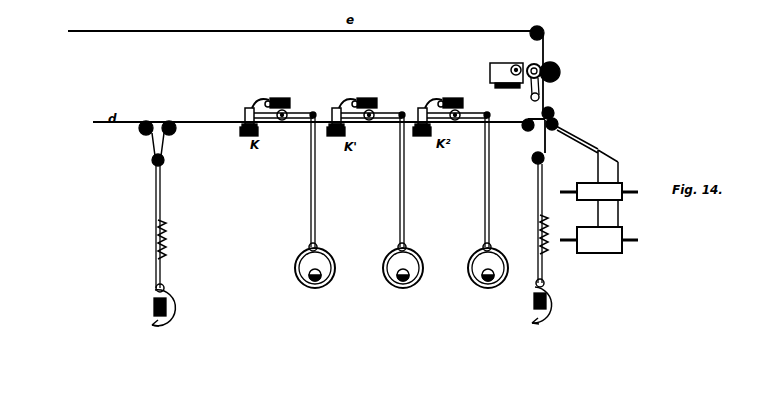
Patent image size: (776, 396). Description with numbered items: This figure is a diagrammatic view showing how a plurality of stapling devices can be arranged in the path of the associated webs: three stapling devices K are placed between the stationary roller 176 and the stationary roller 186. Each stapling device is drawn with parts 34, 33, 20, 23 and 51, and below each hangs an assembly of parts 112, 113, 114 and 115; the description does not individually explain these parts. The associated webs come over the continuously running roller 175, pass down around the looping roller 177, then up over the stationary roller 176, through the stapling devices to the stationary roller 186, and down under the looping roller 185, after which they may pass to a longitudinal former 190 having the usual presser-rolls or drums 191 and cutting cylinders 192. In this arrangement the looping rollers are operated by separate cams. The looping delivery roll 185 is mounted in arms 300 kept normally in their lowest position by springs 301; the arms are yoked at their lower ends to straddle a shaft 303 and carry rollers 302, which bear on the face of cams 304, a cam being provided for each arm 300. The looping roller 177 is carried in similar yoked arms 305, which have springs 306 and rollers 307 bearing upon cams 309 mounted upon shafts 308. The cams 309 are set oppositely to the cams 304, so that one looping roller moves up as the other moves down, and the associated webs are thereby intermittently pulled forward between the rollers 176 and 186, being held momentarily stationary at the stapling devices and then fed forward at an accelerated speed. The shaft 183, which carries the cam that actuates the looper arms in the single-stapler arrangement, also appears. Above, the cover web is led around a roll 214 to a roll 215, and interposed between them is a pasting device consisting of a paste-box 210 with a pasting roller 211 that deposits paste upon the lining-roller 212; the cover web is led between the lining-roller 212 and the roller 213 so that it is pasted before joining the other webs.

The weight block 20 is at (373, 96).
The pulley rod 23 is at (293, 112).
The lever arm 33 is at (258, 103).
The bracket 34 is at (241, 115).
The contact block 51 is at (259, 131).
The suspension rod 112 is at (316, 175).
The float ball 113 is at (307, 266).
The weight 114 is at (326, 281).
The collar 115 is at (318, 250).
The continuously running roller 175 is at (152, 112).
The stationary roller 176 is at (172, 121).
The looping roller 177 is at (165, 160).
The shaft 183 is at (533, 159).
The looping roller 185 is at (559, 124).
The stationary roller 186 is at (520, 131).
The longitudinal former 190 is at (592, 142).
The presser-rolls or drums 191 is at (599, 191).
The cutting cylinders 192 is at (599, 240).
The paste-box 210 is at (492, 70).
The pasting roller 211 is at (516, 65).
The lining-roller 212 is at (540, 67).
The roller 213 is at (561, 72).
The roll 214 is at (545, 32).
The roll 215 is at (555, 112).
The arms 300 is at (538, 213).
The springs 301 is at (549, 255).
The rollers 302 is at (546, 284).
The shaft 303 is at (548, 302).
The cams 304 is at (532, 313).
The yoked arms 305 is at (162, 193).
The springs 306 is at (167, 240).
The rollers 307 is at (164, 286).
The shafts 308 is at (153, 307).
The cams 309 is at (180, 312).